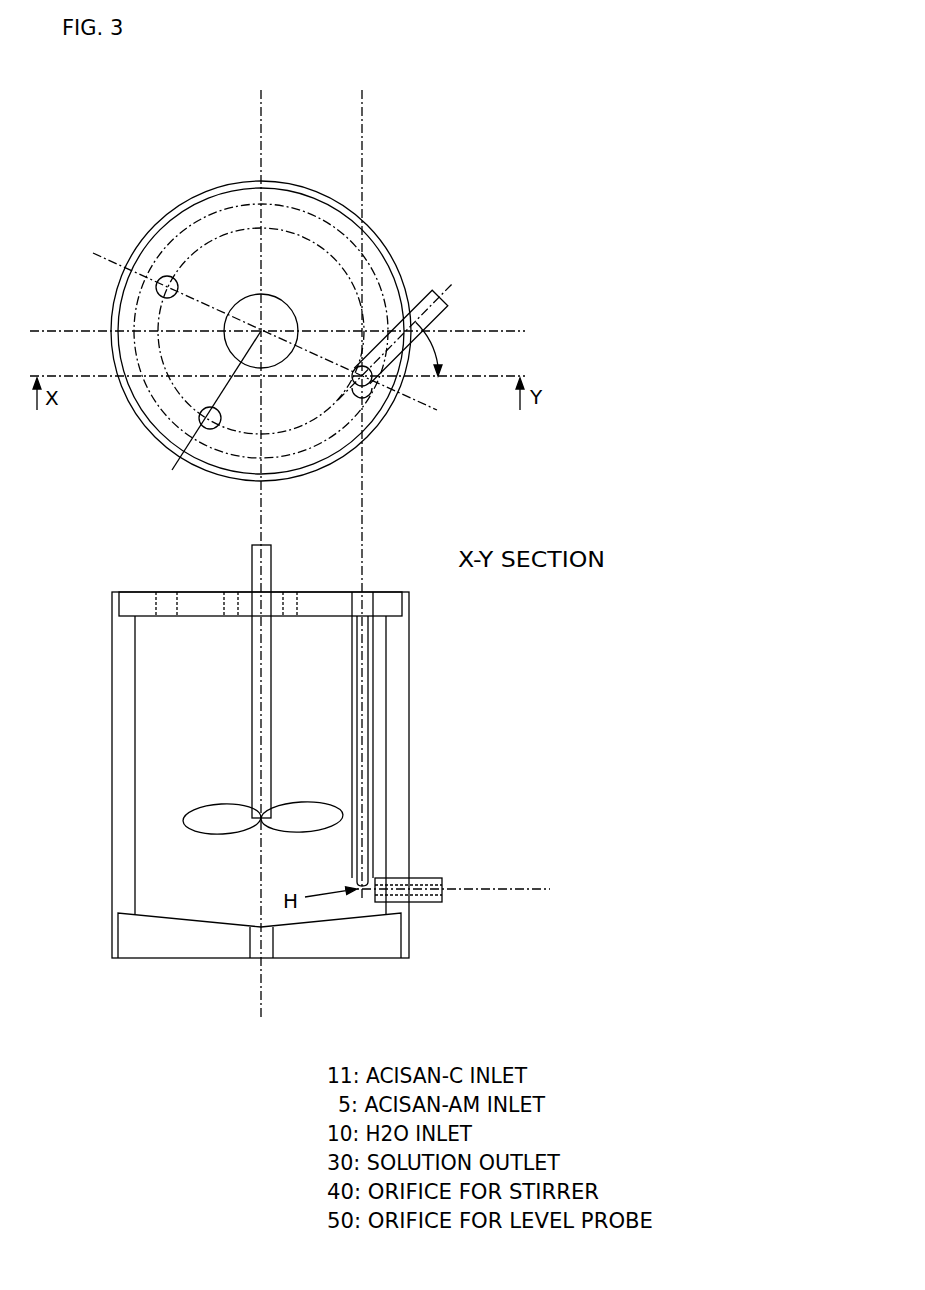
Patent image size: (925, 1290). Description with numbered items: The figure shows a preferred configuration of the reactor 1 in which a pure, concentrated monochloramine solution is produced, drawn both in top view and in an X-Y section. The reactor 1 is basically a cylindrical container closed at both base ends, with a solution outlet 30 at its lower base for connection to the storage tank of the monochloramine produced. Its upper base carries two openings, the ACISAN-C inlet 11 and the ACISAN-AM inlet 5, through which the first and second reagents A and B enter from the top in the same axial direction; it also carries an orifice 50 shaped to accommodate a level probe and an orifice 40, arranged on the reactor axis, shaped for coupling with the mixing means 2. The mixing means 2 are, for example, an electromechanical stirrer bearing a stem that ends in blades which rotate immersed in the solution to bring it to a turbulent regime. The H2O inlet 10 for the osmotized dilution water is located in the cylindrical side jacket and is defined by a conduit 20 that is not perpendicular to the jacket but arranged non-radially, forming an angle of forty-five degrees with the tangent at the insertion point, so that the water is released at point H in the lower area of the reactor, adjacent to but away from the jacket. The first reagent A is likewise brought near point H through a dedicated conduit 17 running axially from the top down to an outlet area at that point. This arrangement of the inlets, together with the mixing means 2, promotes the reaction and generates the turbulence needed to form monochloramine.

The reactor 1 is at (160, 203).
The mixing means 2 is at (243, 663).
The ACISAN-AM inlet 5 is at (166, 602).
The H2O inlet 10 is at (437, 347).
The ACISAN-C inlet 11 is at (370, 403).
The conduit 17 is at (375, 707).
The conduit 20 is at (422, 301).
The solution outlet 30 is at (268, 960).
The orifice for stirrer 40 is at (282, 300).
The orifice for level probe 50 is at (156, 288).